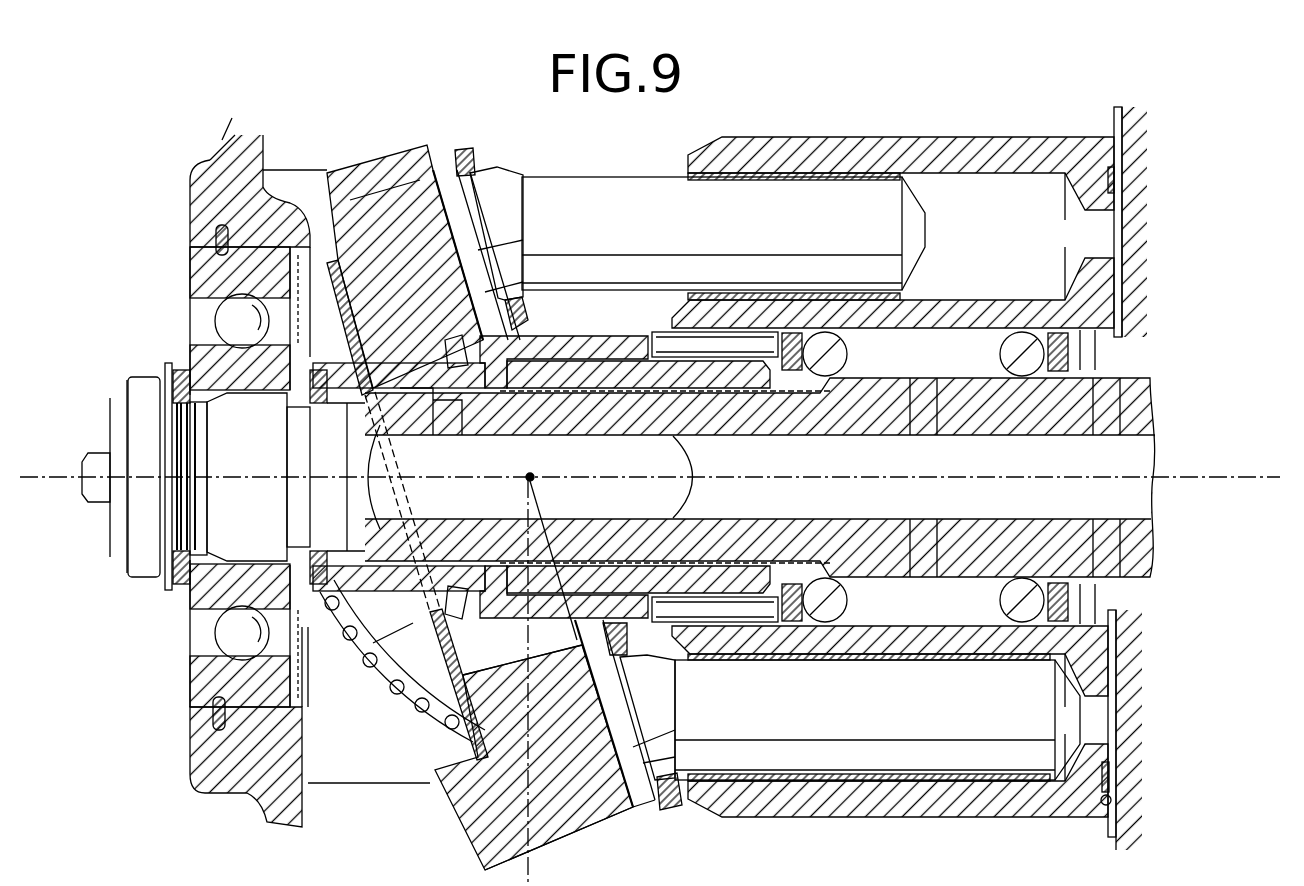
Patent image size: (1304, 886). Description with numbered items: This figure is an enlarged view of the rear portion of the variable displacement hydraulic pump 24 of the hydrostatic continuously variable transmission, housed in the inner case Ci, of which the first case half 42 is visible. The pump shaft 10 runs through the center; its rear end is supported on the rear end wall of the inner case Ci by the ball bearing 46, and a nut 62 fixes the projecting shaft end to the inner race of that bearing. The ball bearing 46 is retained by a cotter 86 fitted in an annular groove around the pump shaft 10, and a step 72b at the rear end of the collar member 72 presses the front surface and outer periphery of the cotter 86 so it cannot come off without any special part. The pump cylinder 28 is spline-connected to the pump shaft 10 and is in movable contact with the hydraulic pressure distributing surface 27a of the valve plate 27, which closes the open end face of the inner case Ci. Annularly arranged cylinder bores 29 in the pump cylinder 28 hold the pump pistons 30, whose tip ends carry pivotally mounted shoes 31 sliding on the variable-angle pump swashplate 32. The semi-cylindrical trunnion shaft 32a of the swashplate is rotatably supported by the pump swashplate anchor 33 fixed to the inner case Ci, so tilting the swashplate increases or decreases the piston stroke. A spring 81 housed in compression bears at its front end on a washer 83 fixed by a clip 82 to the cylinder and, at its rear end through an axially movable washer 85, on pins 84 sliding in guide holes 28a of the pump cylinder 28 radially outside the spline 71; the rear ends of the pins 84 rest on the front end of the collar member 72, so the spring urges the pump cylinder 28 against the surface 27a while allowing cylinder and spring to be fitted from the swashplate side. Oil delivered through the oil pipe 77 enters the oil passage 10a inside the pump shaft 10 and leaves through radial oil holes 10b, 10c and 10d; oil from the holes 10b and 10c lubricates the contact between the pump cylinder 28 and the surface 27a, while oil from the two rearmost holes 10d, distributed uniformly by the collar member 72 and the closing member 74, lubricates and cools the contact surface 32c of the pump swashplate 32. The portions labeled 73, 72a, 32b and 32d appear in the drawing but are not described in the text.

The inner case Ci is at (212, 157).
The first case half 42 is at (205, 204).
The ball bearing 46 is at (188, 283).
The oil pipe 77 is at (95, 458).
The nut 62 is at (150, 570).
The pump shaft 10 is at (726, 487).
The oil passage 10a is at (685, 460).
The oil hole 10b is at (1105, 430).
The oil hole 10c is at (932, 420).
The oil holes 10d is at (453, 433).
The shaft step 73 is at (414, 402).
The collar member 72 is at (590, 330).
The sleeve shoe portion 72a is at (462, 358).
The step 72b is at (330, 338).
The spline 71 is at (627, 400).
The closing member 74 is at (340, 290).
The pins 84 is at (703, 343).
The washer 85 is at (795, 368).
The spring 81 is at (823, 376).
The washer 83 is at (1030, 372).
The clip 82 is at (1062, 330).
The pump cylinder 28 is at (836, 132).
The guide holes 28a is at (753, 343).
The cylinder bores 29 is at (983, 172).
The pump pistons 30 is at (741, 243).
The shoes 31 is at (500, 210).
The hydraulic pump 24 is at (967, 126).
The valve plate 27 is at (1112, 838).
The hydraulic pressure distributing surface 27a is at (1117, 808).
The pump swashplate 32 is at (491, 477).
The trunnion shaft 32a is at (417, 685).
The swash plate surface 32b is at (558, 643).
The contact surface 32c is at (440, 207).
The swash plate end 32d is at (505, 775).
The cotter 86 is at (310, 635).
The pump swashplate anchor 33 is at (352, 768).